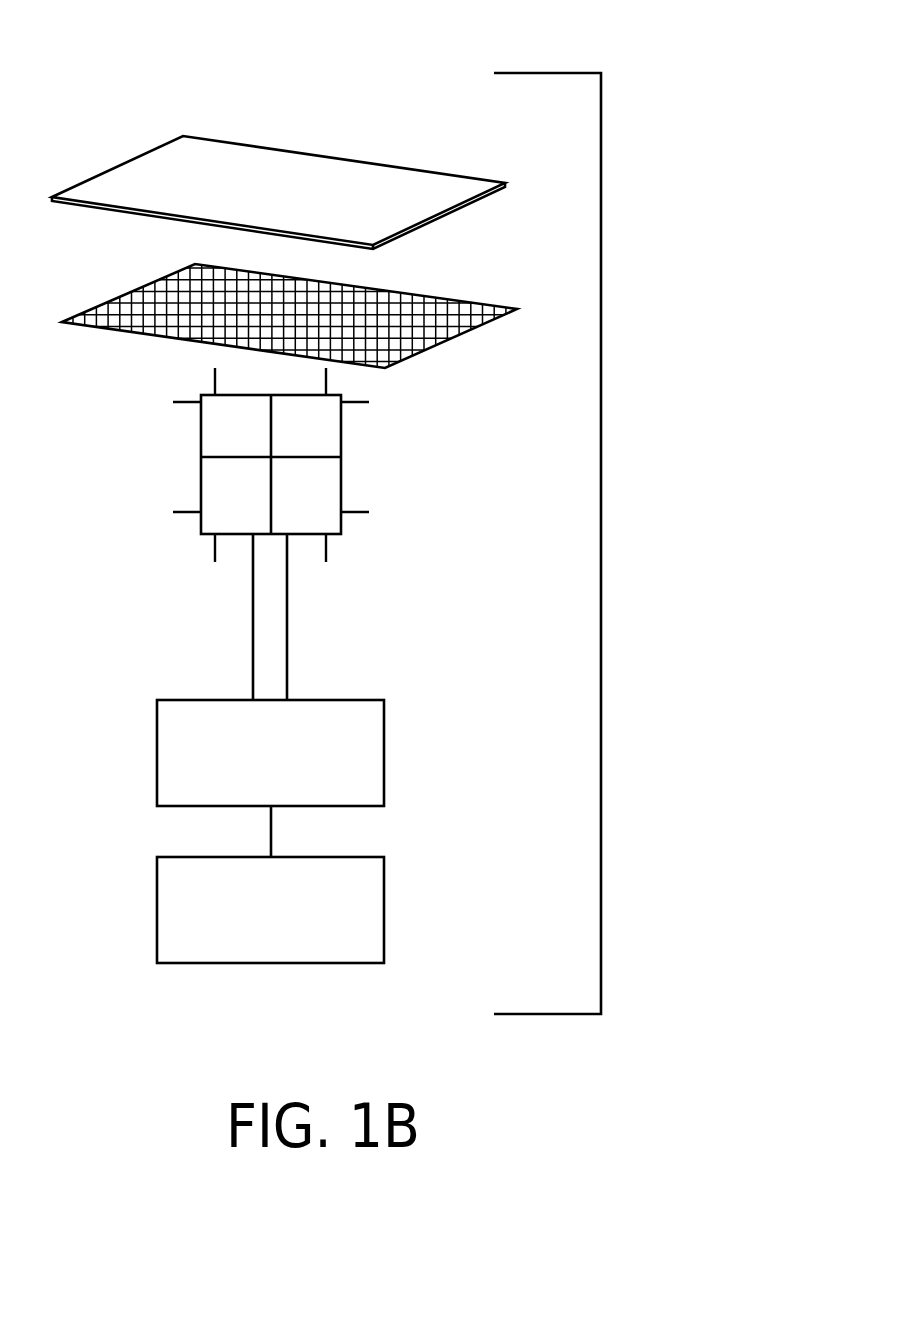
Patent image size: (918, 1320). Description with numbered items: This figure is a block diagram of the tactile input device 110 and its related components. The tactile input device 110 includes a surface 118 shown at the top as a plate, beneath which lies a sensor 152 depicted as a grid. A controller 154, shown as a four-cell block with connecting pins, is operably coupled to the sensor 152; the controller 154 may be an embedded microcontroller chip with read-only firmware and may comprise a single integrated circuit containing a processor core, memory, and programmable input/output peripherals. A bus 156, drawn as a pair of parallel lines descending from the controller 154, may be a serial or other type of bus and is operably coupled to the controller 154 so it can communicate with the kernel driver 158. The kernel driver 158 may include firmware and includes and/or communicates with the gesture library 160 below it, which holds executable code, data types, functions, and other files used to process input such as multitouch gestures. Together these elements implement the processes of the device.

The tactile input device 110 is at (601, 524).
The surface 118 is at (423, 171).
The sensor 152 is at (413, 294).
The controller 154 is at (335, 440).
The bus 156 is at (288, 623).
The kernel driver 158 is at (386, 752).
The gesture library 160 is at (386, 909).